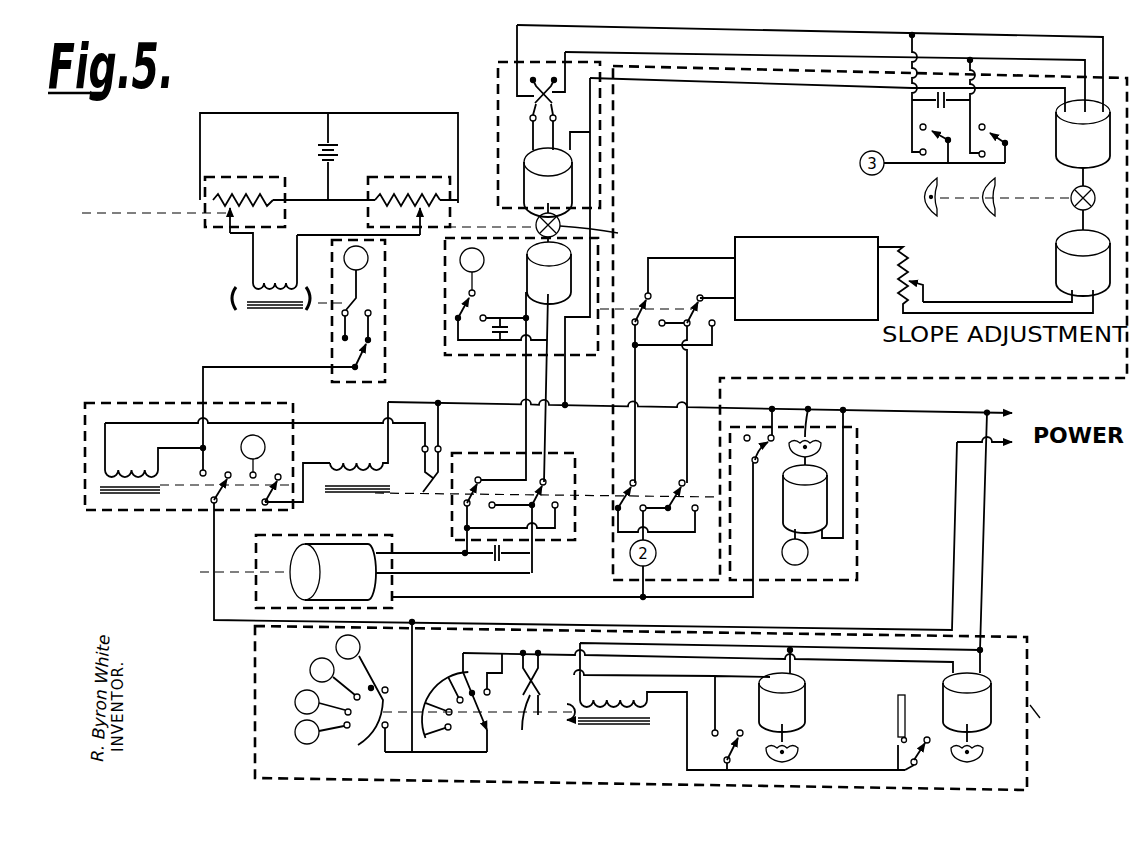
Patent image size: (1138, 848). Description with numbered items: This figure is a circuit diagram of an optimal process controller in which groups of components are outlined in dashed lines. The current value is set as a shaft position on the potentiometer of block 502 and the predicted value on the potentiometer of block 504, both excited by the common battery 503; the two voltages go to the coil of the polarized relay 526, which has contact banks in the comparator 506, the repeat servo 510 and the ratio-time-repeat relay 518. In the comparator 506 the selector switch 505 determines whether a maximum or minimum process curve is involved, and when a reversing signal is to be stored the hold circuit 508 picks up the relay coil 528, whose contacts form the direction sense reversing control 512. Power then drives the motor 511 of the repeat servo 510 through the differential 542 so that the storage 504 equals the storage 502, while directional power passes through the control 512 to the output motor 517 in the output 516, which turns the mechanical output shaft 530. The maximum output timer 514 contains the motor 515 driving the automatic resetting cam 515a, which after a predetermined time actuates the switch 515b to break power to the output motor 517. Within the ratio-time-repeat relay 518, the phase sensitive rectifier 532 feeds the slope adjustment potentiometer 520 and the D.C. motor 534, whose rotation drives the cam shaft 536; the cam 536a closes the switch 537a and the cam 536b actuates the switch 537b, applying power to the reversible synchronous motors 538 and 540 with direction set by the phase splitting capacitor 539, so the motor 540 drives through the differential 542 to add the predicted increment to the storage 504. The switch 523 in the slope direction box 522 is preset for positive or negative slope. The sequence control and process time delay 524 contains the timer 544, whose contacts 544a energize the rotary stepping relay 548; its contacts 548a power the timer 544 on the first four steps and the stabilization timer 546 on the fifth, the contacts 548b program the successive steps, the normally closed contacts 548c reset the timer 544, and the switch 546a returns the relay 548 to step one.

The current value potentiometer 502 is at (231, 179).
The battery 503 is at (340, 144).
The predicted value storage potentiometer 504 is at (376, 179).
The selector switch 505 is at (382, 346).
The comparator 506 is at (386, 380).
The hold circuit 508 is at (104, 405).
The repeat servo 510 is at (450, 355).
The repeat servo motor 511 is at (527, 282).
The direction sense reversing control 512 is at (462, 455).
The maximum output timer 514 is at (862, 465).
The timer motor 515 is at (817, 500).
The automatic resetting cam 515a is at (822, 422).
The timer switch 515b is at (758, 422).
The output 516 is at (392, 611).
The output motor 517 is at (365, 586).
The ratio-time-repeat relay 518 is at (880, 380).
The slope adjustment potentiometer 520 is at (906, 272).
The slope direction box 522 is at (498, 100).
The slope direction switch 523 is at (560, 95).
The sequence control and process time delay 524 is at (1000, 639).
The polarized relay 526 is at (290, 307).
The hold relay coil 528 is at (345, 494).
The mechanical output shaft 530 is at (200, 571).
The phase sensitive rectifier 532 is at (825, 236).
The D.C. motor 534 is at (1056, 268).
The cam shaft 536 is at (1003, 198).
The cam 536a is at (986, 212).
The cam 536b is at (922, 208).
The switch 537a is at (1006, 155).
The switch 537b is at (920, 140).
The reversible synchronous motor 538 is at (1056, 136).
The phase splitting capacitor 539 is at (912, 98).
The reversible synchronous motor 540 is at (530, 162).
The differential 542 is at (536, 222).
The timer 544 is at (943, 770).
The timer contacts 544a is at (905, 750).
The process stabilization timer 546 is at (800, 692).
The timer switch 546a is at (735, 742).
The rotary stepping relay 548 is at (654, 728).
The stepping switch contacts 548a is at (461, 714).
The program switch 548b is at (341, 705).
The normally closed contacts 548c is at (495, 704).